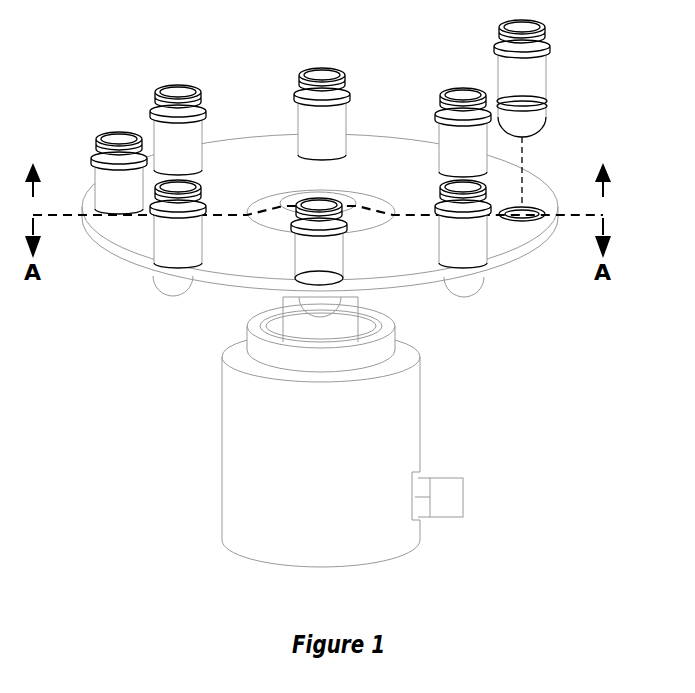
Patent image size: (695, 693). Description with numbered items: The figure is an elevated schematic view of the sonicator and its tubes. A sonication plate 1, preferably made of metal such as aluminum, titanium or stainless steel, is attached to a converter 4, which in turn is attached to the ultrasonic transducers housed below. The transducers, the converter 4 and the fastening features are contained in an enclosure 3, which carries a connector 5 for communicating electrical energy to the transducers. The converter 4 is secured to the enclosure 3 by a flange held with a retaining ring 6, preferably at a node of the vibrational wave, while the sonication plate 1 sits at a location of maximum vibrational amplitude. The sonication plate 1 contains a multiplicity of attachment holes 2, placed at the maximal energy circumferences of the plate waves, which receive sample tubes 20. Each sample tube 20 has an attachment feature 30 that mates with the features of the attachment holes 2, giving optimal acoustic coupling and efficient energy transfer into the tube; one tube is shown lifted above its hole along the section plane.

The sonication plate 1 is at (273, 152).
The attachment holes 2 is at (522, 216).
The enclosure 3 is at (222, 473).
The converter 4 is at (353, 306).
The connector 5 is at (463, 494).
The retaining ring 6 is at (258, 323).
The sample tubes 20 is at (153, 125).
The attachment feature 30 is at (546, 102).